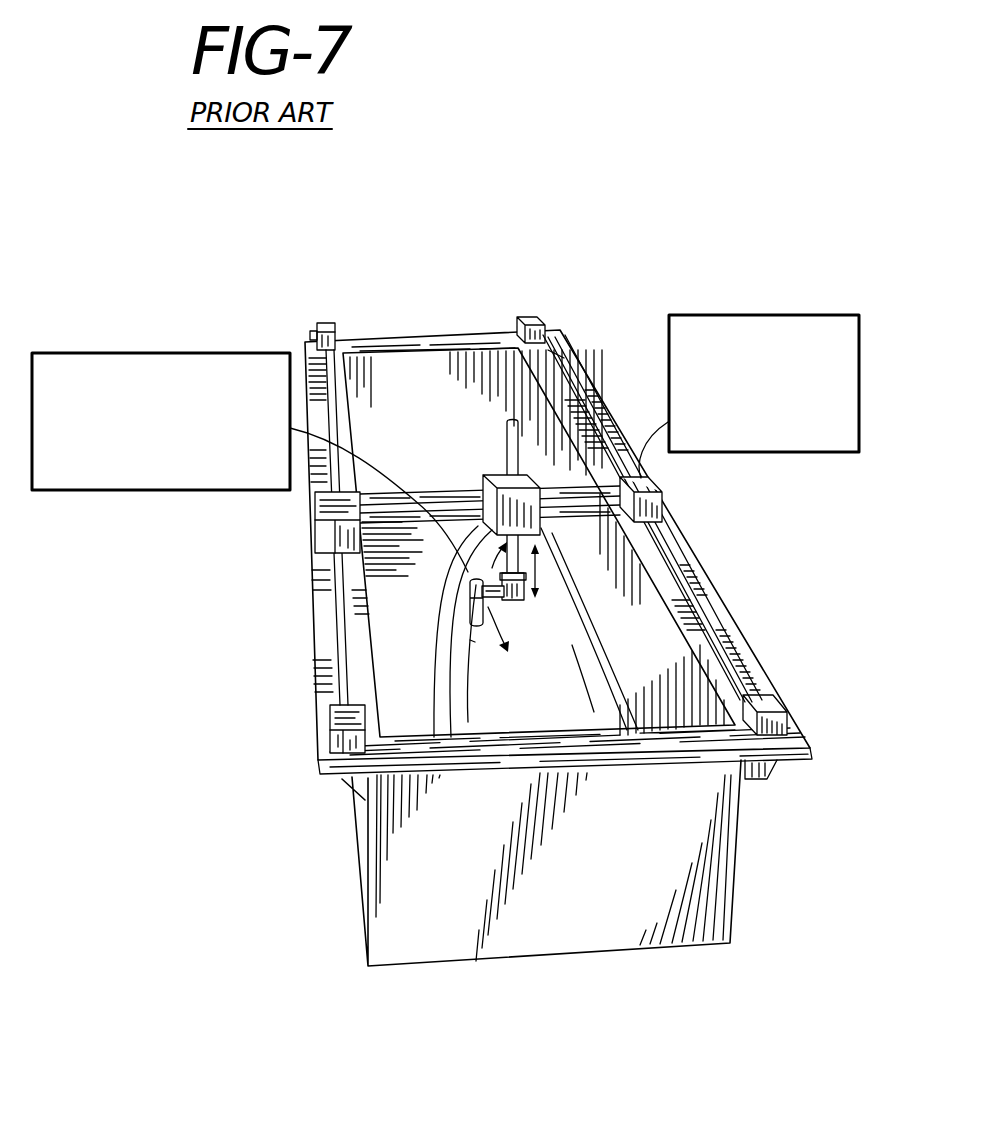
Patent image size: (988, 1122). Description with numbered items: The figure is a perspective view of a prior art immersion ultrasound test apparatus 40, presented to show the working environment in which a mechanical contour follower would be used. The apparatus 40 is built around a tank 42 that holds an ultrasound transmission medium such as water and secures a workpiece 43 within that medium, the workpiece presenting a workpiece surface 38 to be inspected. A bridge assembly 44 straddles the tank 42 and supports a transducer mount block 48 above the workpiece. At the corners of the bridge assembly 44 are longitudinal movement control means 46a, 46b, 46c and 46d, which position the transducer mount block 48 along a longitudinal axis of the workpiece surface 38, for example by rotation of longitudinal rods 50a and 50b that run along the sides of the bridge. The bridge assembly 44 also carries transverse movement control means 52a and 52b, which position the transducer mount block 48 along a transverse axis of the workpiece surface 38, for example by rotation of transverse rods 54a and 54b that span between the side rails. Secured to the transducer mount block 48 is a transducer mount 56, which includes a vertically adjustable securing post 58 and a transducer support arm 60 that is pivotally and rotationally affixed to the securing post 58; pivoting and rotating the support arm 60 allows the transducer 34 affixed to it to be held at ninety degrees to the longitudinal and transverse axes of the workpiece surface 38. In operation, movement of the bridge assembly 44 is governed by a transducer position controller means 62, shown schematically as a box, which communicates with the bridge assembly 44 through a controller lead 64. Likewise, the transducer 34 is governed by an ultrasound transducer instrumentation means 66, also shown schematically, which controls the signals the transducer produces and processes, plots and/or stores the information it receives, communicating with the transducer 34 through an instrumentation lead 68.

The transducer 34 is at (470, 598).
The workpiece surface 38 is at (534, 707).
The immersion ultrasound test apparatus 40 is at (694, 278).
The tank 42 is at (697, 842).
The workpiece 43 is at (425, 700).
The bridge assembly 44 is at (400, 445).
The longitudinal movement control means 46a is at (322, 758).
The longitudinal movement control means 46b is at (790, 730).
The longitudinal movement control means 46c is at (540, 318).
The longitudinal movement control means 46d is at (328, 323).
The transducer mount block 48 is at (508, 420).
The longitudinal rod 50a is at (340, 575).
The longitudinal rod 50b is at (728, 648).
The transverse movement control means 52a is at (318, 494).
The transverse movement control means 52b is at (640, 478).
The transverse rod 54a is at (590, 540).
The transverse rod 54b is at (562, 348).
The transducer mount 56 is at (568, 621).
The securing post 58 is at (483, 515).
The transducer support arm 60 is at (527, 598).
The transducer position controller means 62 is at (814, 322).
The controller lead 64 is at (643, 462).
The ultrasound transducer instrumentation means 66 is at (80, 473).
The instrumentation lead 68 is at (297, 400).